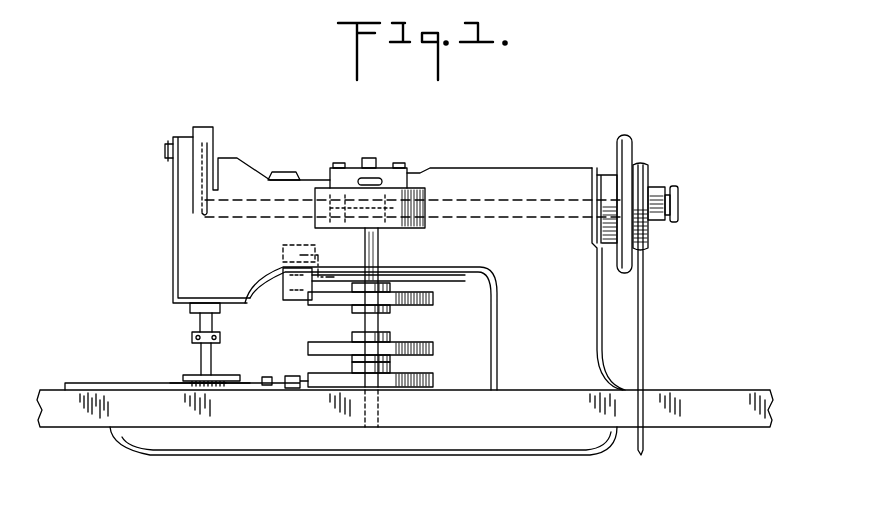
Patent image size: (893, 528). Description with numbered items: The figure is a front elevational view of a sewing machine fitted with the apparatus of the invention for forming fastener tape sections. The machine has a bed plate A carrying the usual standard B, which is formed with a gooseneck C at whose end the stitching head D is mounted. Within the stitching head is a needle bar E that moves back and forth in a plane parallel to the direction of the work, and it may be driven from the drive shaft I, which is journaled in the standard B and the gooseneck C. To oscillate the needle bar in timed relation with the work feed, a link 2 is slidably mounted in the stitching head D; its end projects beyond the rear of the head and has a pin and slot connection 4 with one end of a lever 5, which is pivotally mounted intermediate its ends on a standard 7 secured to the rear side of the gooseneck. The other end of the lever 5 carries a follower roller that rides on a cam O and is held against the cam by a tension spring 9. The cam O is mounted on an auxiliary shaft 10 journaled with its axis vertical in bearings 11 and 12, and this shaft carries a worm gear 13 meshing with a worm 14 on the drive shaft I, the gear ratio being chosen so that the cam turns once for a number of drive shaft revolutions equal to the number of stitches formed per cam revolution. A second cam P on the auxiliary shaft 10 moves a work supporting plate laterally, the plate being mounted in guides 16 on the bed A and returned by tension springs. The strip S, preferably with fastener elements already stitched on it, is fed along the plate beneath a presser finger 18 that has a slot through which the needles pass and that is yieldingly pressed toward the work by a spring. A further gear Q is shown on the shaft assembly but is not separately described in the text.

The bed plate A is at (725, 396).
The standard B is at (576, 325).
The gooseneck C is at (450, 184).
The stitching head D is at (203, 229).
The needle bar E is at (216, 321).
The drive shaft I is at (517, 200).
The cam O is at (416, 291).
The cam P is at (418, 388).
The intermediate gear Q is at (425, 342).
The strip S is at (218, 388).
The link 2 is at (158, 255).
The pin and slot connection 4 is at (178, 130).
The lever 5 is at (193, 150).
The standard 7 is at (292, 292).
The tension spring 9 is at (160, 323).
The auxiliary shaft 10 is at (379, 249).
The bearing 11 is at (387, 390).
The bearing 12 is at (373, 175).
The worm gear 13 is at (330, 198).
The worm 14 is at (355, 195).
The guides 16 is at (100, 383).
The presser finger 18 is at (192, 377).